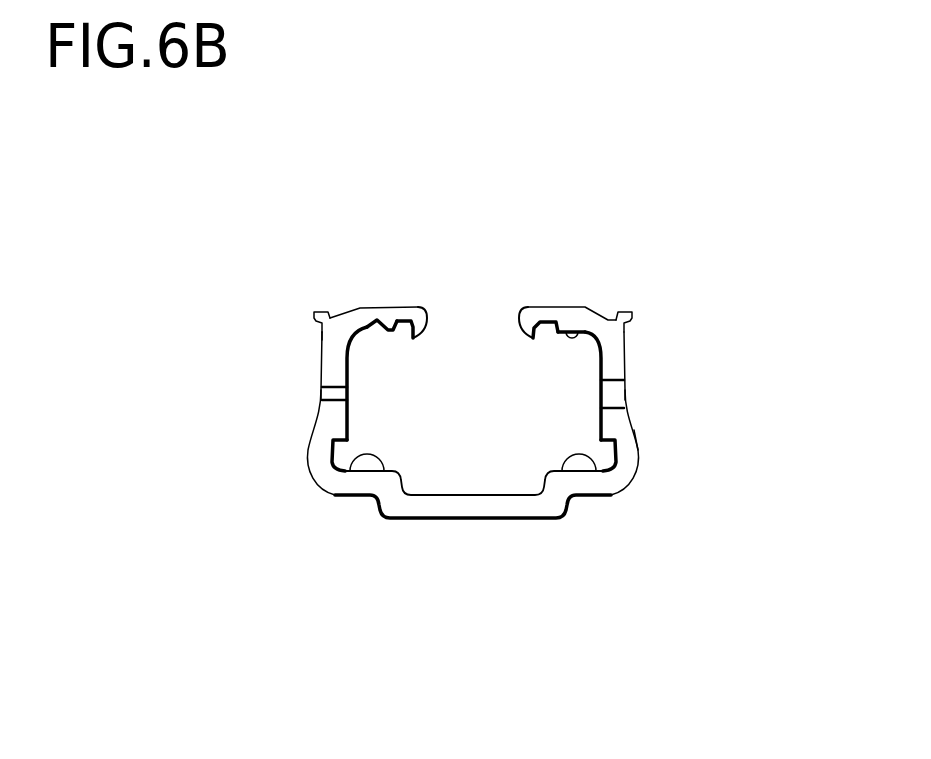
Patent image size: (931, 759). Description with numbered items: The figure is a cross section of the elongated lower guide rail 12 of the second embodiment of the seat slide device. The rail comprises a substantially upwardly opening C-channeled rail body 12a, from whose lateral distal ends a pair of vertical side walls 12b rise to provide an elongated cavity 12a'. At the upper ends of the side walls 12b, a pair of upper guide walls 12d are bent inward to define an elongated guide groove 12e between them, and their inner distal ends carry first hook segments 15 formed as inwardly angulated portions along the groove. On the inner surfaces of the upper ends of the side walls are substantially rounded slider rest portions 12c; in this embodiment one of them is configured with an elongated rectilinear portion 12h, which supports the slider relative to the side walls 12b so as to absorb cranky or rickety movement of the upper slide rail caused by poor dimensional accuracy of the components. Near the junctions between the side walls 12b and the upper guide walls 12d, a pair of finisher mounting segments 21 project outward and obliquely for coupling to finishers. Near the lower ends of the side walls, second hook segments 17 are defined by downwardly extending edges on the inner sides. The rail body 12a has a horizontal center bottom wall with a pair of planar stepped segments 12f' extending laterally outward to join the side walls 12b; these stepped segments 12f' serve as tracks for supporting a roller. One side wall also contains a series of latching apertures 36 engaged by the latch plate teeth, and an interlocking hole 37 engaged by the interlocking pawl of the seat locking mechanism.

The lower guide rail 12 is at (378, 197).
The rail body 12a is at (694, 430).
The vertical side walls 12b is at (316, 432).
The slider rest portions 12c is at (336, 355).
The upper guide walls 12d is at (363, 307).
The elongated guide groove 12e is at (474, 330).
The stepped segments 12f' is at (470, 538).
The elongated rectilinear portion 12h is at (589, 322).
The elongated cavity 12a' is at (480, 403).
The first hook segments 15 is at (422, 307).
The second hook segments 17 is at (335, 443).
The finisher mounting segments 21 is at (317, 311).
The latching apertures 36 is at (320, 395).
The interlocking hole 37 is at (604, 388).